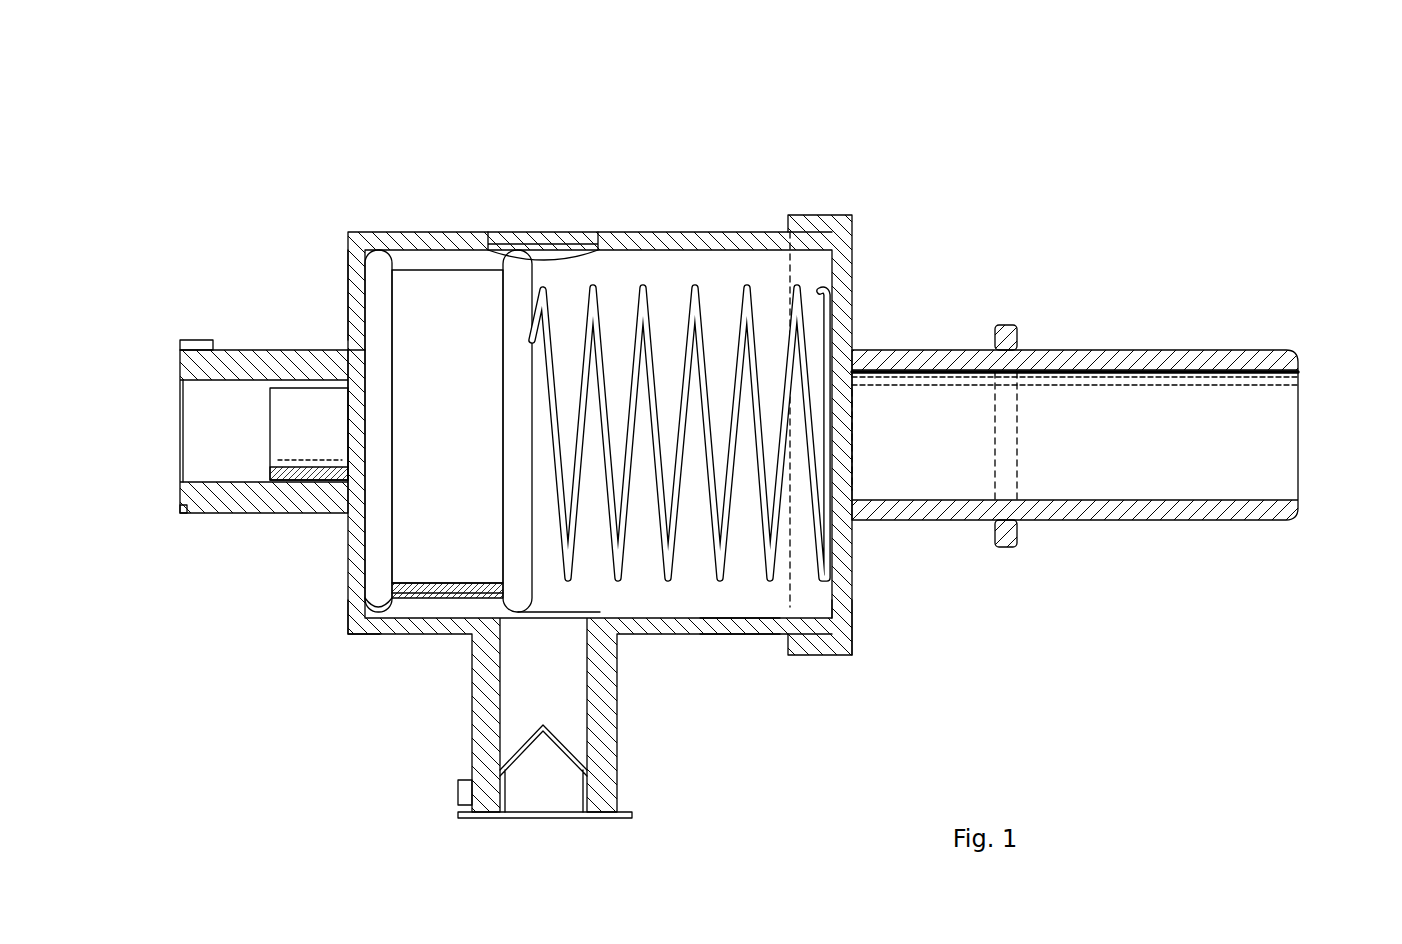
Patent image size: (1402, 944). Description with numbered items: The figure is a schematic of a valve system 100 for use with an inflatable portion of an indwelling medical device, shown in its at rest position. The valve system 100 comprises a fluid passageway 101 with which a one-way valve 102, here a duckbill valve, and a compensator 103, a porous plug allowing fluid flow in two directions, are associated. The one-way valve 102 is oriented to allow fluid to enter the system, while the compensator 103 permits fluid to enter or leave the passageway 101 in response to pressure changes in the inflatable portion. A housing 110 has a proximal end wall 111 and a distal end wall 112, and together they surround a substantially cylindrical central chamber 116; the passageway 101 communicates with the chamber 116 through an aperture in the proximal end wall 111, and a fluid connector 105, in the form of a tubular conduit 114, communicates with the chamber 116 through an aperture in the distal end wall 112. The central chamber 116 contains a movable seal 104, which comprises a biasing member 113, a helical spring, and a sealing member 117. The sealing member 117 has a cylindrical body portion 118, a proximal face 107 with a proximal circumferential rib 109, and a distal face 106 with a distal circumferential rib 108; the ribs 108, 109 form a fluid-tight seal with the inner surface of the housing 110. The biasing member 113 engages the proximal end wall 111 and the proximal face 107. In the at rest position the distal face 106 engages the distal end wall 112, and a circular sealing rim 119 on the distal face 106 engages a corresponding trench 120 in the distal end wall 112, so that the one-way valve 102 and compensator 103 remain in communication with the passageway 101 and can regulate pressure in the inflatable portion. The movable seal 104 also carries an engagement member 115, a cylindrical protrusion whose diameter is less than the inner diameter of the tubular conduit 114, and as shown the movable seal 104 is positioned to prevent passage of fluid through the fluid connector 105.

The valve system 100 is at (747, 163).
The fluid passageway 101 is at (1260, 432).
The one-way valve 102 is at (590, 770).
The compensator 103 is at (575, 253).
The movable seal 104 is at (455, 283).
The fluid connector 105 is at (202, 413).
The distal face 106 is at (362, 285).
The proximal face 107 is at (533, 570).
The distal circumferential rib 108 is at (377, 265).
The proximal circumferential rib 109 is at (518, 265).
The housing 110 is at (733, 240).
The proximal end wall 111 is at (852, 602).
The distal end wall 112 is at (358, 582).
The biasing member 113 is at (833, 297).
The tubular conduit 114 is at (187, 460).
The engagement member 115 is at (305, 453).
The central chamber 116 is at (737, 603).
The sealing member 117 is at (378, 592).
The cylindrical body portion 118 is at (448, 572).
The circular sealing rim 119 is at (350, 498).
The trench 120 is at (350, 350).